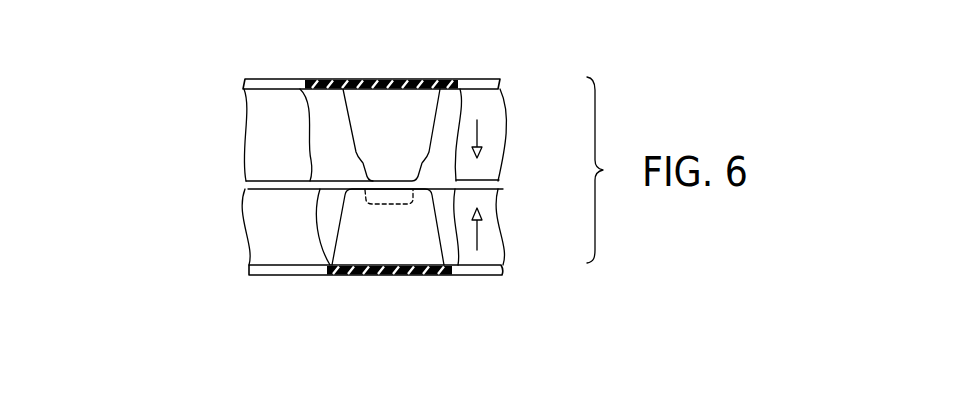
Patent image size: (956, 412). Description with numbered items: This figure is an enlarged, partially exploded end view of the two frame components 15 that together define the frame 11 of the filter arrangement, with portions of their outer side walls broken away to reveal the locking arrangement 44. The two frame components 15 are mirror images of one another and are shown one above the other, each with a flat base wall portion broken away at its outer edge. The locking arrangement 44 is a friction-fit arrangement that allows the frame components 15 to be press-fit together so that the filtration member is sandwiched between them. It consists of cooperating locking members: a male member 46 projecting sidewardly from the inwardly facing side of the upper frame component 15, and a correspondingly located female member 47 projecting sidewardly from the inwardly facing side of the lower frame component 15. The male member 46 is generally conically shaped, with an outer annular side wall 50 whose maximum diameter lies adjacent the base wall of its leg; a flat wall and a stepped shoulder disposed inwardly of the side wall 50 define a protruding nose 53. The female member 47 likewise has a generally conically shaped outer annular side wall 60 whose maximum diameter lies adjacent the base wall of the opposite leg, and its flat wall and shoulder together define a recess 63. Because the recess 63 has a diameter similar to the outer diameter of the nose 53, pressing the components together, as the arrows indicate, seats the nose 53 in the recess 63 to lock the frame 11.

The frame 11 is at (470, 78).
The frame component 15 is at (279, 78).
The locking arrangement 44 is at (350, 172).
The male member 46 is at (347, 134).
The female member 47 is at (333, 240).
The outer annular side wall 50 is at (380, 122).
The protruding nose 53 is at (410, 190).
The outer annular side wall 60 is at (388, 230).
The recess 63 is at (412, 185).